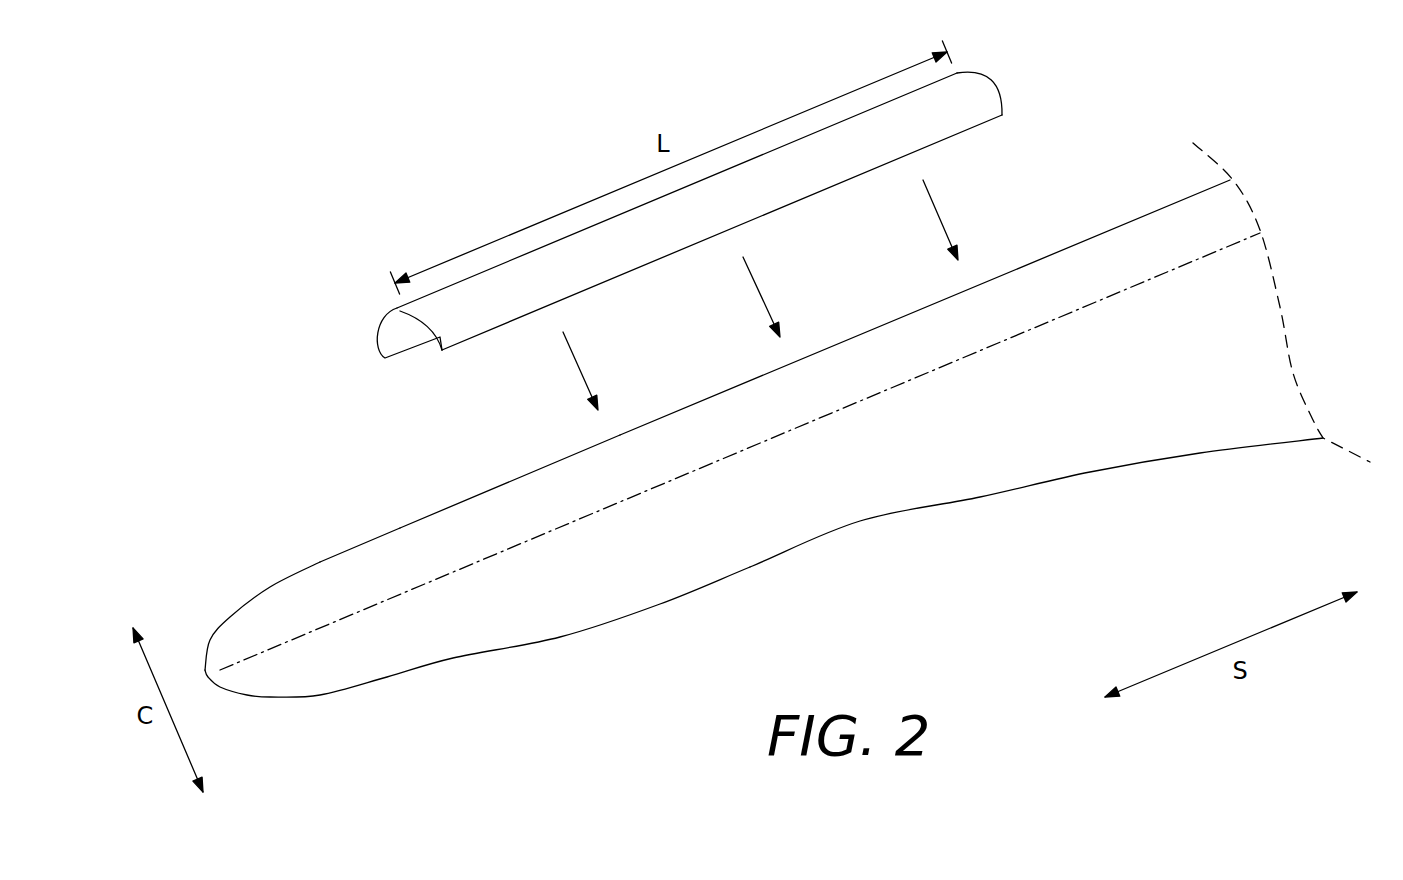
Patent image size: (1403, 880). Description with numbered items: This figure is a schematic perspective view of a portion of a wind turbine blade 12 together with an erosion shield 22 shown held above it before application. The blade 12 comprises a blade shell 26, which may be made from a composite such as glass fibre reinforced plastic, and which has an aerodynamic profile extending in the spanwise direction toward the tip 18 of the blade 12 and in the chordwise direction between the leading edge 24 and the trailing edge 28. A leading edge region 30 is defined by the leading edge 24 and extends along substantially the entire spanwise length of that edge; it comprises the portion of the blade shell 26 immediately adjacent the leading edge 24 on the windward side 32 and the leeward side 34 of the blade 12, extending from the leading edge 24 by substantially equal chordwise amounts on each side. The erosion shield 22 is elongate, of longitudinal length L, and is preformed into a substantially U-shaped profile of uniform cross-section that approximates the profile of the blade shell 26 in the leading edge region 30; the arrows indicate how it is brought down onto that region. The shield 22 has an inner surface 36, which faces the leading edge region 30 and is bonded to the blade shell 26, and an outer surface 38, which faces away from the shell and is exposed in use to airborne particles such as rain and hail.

The wind turbine blade 12 is at (765, 420).
The tip 18 is at (205, 676).
The erosion shield 22 is at (710, 223).
The leading edge 24 is at (390, 530).
The blade shell 26 is at (877, 507).
The trailing edge 28 is at (750, 567).
The leading edge region 30 is at (1107, 252).
The windward side 32 is at (1196, 430).
The leeward side 34 is at (518, 465).
The inner surface 36 is at (397, 338).
The outer surface 38 is at (967, 103).